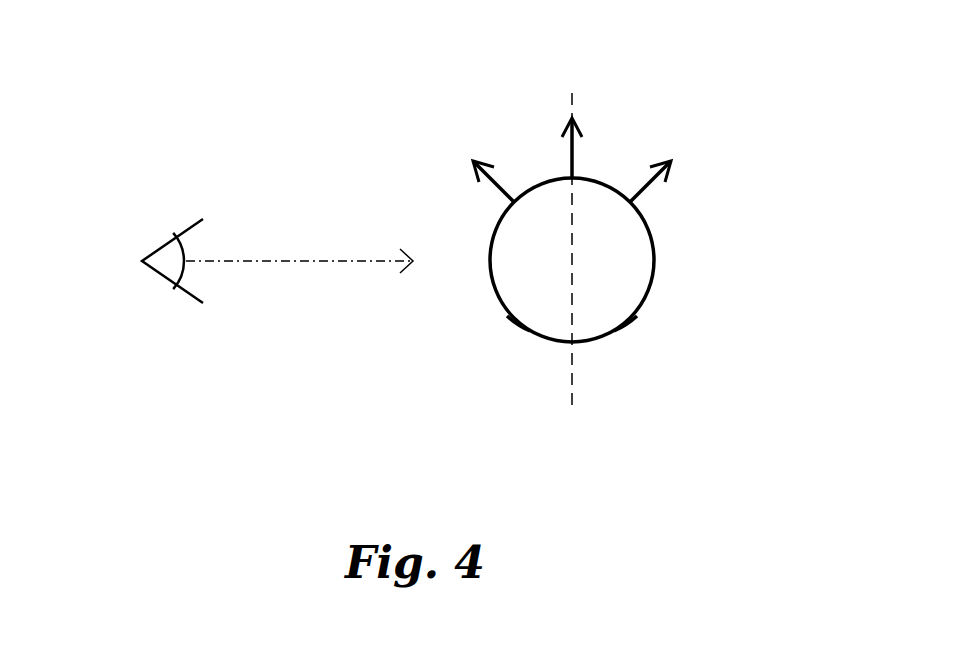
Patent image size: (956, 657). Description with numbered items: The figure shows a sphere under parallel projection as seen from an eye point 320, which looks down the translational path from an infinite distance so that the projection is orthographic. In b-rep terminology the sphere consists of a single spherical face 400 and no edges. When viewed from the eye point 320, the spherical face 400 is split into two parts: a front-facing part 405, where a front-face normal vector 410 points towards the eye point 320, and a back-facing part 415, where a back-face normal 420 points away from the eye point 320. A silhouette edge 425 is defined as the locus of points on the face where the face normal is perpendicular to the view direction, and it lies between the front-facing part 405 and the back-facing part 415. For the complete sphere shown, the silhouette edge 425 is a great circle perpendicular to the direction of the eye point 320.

The eye point 320 is at (229, 231).
The spherical face 400 is at (613, 365).
The front-facing part 405 is at (513, 323).
The front-face normal vector 410 is at (495, 173).
The back-facing part 415 is at (627, 323).
The back-face normal 420 is at (653, 183).
The silhouette edge 425 is at (575, 113).